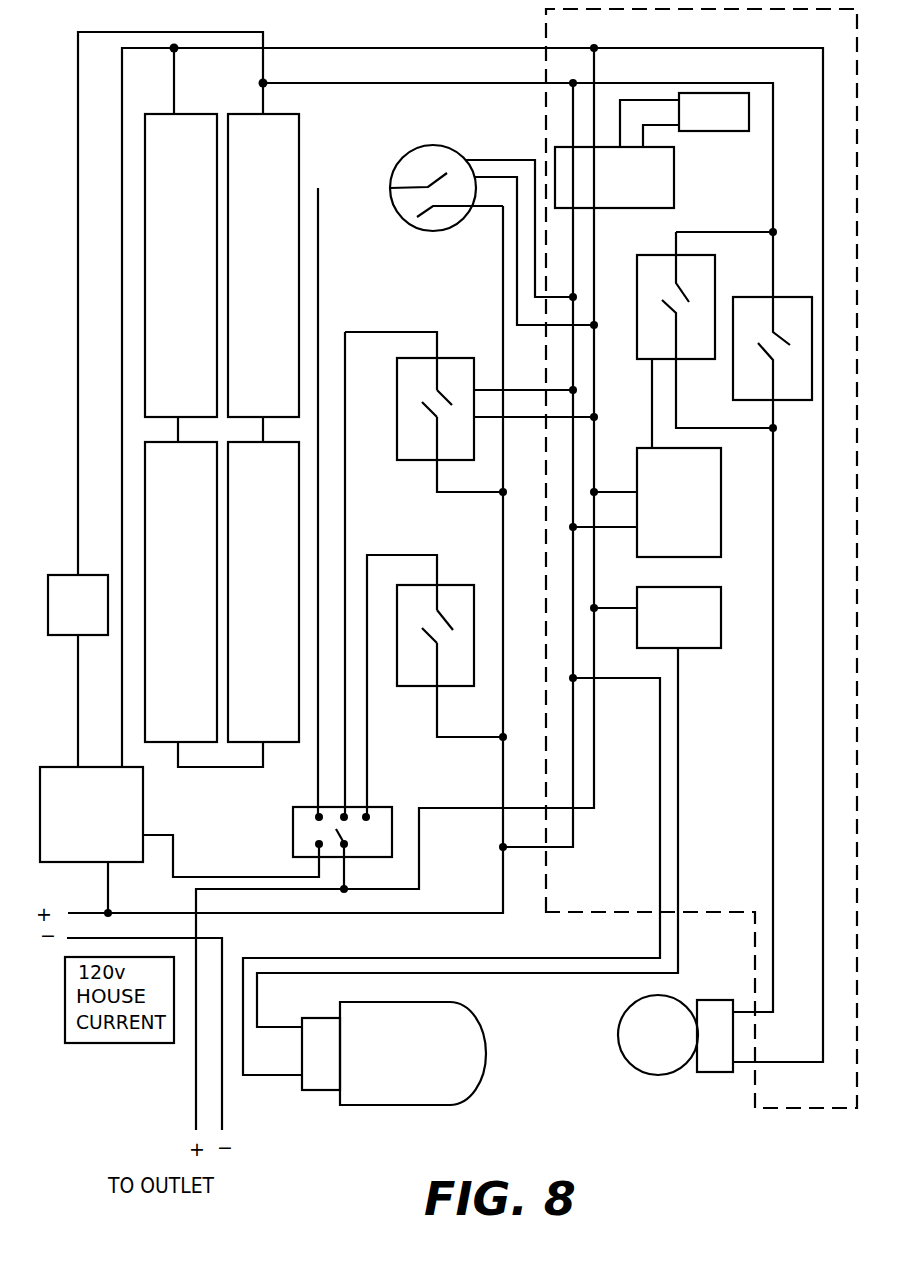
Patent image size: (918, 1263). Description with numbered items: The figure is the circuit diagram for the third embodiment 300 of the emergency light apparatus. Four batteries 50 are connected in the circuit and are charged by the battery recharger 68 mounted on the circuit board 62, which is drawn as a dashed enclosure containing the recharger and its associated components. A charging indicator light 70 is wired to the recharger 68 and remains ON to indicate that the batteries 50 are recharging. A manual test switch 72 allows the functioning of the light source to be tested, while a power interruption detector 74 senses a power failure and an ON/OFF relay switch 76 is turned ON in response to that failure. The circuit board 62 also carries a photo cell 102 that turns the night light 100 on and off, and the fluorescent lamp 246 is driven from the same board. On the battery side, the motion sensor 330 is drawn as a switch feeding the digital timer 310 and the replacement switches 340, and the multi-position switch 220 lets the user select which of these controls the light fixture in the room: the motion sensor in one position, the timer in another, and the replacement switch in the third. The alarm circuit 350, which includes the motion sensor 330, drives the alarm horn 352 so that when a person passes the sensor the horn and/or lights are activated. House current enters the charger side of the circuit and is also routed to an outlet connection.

The third embodiment 300 is at (68, 134).
The batteries 50 is at (160, 209).
The circuit board 62 is at (544, 20).
The battery recharger 68 is at (623, 194).
The charging indicator light 70 is at (692, 119).
The manual test switch 72 is at (760, 306).
The power interruption detector 74 is at (710, 474).
The ON/OFF relay switch 76 is at (660, 260).
The photo cell 102 is at (690, 638).
The night light 100 is at (470, 1026).
The fluorescent lamp 246 is at (656, 1067).
The digital timer 310 is at (448, 447).
The motion sensor 330 is at (442, 222).
The replacement switches 340 is at (461, 592).
The alarm circuit 350 is at (93, 851).
The alarm horn 352 is at (70, 622).
The multi-position switch 220 is at (289, 818).